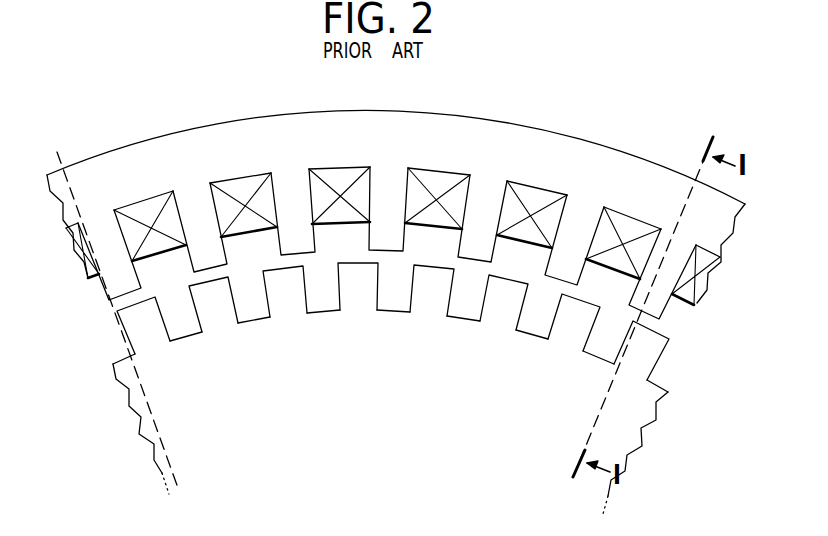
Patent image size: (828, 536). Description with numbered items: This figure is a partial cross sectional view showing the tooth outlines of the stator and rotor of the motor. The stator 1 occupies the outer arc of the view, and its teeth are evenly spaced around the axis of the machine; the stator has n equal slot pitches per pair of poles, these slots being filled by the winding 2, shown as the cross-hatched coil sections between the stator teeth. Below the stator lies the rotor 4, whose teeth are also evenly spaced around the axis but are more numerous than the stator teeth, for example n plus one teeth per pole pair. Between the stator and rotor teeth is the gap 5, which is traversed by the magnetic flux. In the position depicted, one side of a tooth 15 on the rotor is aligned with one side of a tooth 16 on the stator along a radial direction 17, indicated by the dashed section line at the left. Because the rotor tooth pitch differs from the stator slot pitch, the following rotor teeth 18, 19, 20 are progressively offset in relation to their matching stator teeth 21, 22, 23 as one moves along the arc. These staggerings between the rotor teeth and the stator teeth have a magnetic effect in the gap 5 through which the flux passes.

The stator 1 is at (590, 168).
The winding 2 is at (532, 198).
The rotor 4 is at (603, 432).
The gap 5 is at (648, 318).
The tooth 15 is at (140, 328).
The tooth 16 is at (113, 257).
The radial direction 17 is at (167, 452).
The tooth 18 is at (210, 303).
The tooth 19 is at (280, 290).
The tooth 20 is at (353, 280).
The tooth 21 is at (198, 225).
The tooth 22 is at (295, 207).
The tooth 23 is at (388, 198).